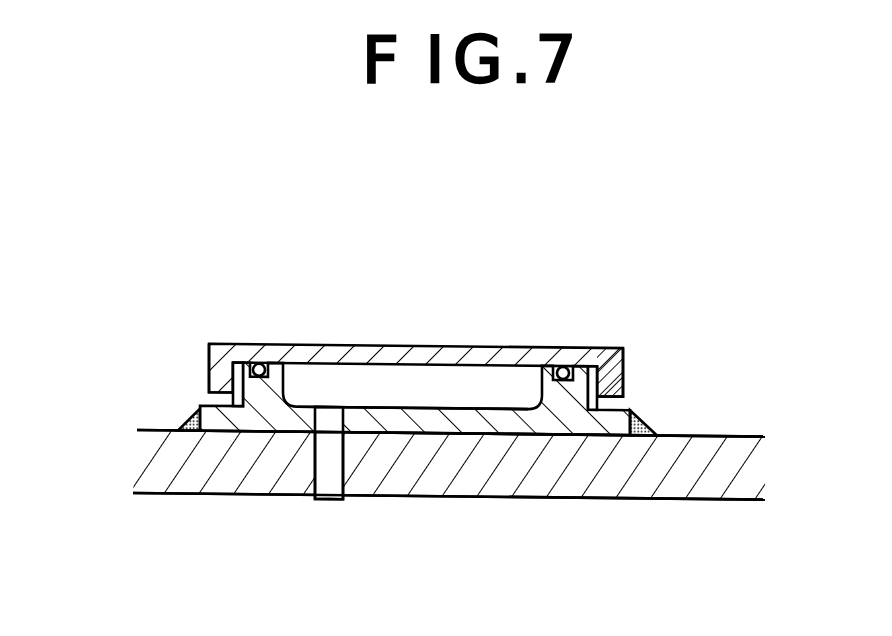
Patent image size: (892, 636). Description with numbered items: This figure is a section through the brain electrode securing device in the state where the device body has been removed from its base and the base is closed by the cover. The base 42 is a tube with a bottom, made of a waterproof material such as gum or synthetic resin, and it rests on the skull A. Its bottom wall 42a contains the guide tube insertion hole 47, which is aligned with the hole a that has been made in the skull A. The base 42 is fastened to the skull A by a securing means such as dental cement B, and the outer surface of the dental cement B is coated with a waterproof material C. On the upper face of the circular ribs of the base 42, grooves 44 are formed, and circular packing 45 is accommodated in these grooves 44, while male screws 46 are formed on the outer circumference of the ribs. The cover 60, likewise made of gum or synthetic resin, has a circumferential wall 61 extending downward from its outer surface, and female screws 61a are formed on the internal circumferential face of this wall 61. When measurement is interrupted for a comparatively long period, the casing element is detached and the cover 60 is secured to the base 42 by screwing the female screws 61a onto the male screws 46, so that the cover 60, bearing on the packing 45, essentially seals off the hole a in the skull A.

The cover 60 is at (466, 315).
The circumferential wall 61 is at (208, 362).
The female screws 61a is at (625, 372).
The base 42 is at (627, 368).
The bottom wall 42a is at (438, 425).
The grooves 44 is at (257, 362).
The circular packing 45 is at (561, 366).
The male screws 46 is at (644, 432).
The guide tube insertion hole 47 is at (326, 417).
The hole a is at (328, 483).
The skull A is at (742, 433).
The dental cement B is at (199, 418).
The waterproof material C is at (187, 422).